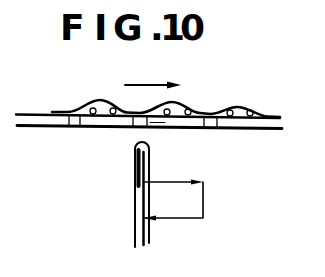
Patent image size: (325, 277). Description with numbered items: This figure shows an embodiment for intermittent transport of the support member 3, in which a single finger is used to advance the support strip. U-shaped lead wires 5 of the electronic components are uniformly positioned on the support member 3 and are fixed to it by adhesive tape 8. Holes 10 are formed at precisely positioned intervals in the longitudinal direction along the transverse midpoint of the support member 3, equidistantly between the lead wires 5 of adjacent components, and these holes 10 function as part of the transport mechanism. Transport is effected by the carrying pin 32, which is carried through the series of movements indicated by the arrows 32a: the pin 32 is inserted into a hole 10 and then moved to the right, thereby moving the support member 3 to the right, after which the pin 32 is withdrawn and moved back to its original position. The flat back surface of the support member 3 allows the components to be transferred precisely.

The support member 3 is at (80, 126).
The lead wires 5 is at (106, 106).
The adhesive tape 8 is at (235, 86).
The hole 10 is at (158, 127).
The carrying pin 32 is at (133, 181).
The arrows indicating movements of the carrying pin 32a is at (208, 203).